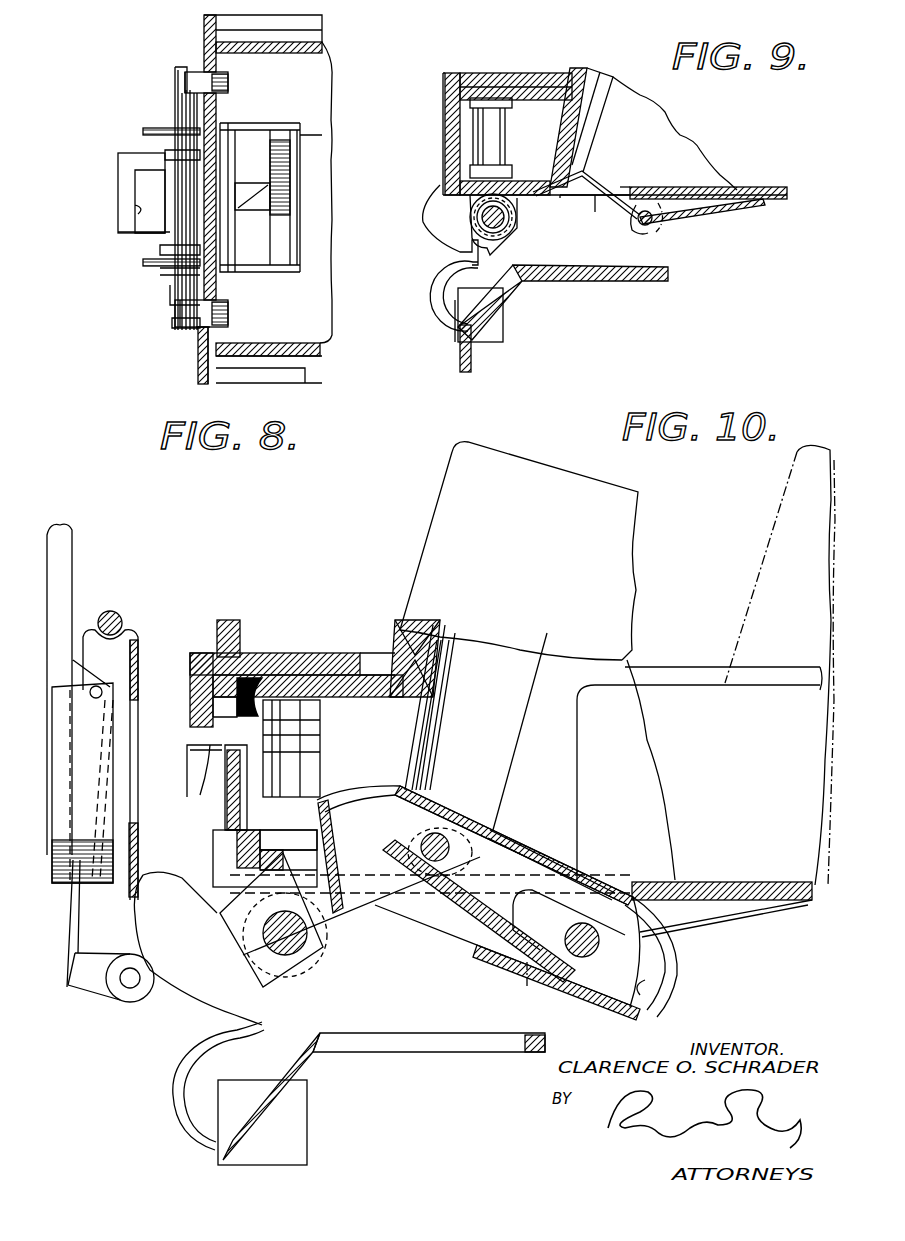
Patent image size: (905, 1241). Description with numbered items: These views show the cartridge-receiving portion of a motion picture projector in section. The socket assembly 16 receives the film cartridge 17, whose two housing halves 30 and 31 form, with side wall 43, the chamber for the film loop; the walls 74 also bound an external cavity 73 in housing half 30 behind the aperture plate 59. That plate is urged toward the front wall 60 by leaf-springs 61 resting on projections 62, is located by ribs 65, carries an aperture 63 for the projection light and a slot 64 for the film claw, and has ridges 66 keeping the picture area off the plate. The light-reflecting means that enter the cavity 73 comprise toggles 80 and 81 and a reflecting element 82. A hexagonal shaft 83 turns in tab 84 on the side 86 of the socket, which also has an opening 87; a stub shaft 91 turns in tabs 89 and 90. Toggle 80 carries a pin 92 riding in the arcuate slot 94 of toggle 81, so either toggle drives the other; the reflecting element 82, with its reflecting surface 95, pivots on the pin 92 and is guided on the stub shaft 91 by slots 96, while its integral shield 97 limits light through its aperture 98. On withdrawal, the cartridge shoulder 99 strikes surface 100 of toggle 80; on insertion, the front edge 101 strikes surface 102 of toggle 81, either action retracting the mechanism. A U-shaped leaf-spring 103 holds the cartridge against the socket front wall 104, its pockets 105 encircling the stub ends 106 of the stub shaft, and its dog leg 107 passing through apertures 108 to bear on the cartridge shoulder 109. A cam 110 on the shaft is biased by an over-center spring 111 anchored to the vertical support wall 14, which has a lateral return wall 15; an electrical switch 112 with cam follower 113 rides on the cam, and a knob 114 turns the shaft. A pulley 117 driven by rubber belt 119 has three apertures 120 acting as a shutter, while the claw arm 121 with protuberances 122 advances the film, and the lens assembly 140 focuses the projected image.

In FIG. 9, the vertical support wall 14 is at (472, 362).
In FIG. 9, the lateral return wall 15 is at (627, 280).
In FIG. 10, the lateral return wall 15 is at (540, 1055).
In FIG. 8, the socket assembly 16 is at (189, 381).
In FIG. 9, the socket assembly 16 is at (486, 65).
In FIG. 10, the socket assembly 16 is at (255, 652).
In FIG. 8, the film cartridge 17 is at (347, 63).
In FIG. 9, the film cartridge 17 is at (690, 137).
In FIG. 10, the film cartridge 17 is at (758, 506).
In FIG. 9, the housing half 30 is at (605, 65).
In FIG. 10, the housing half 30 is at (237, 838).
In FIG. 9, the housing half 31 is at (578, 67).
In FIG. 10, the housing half 31 is at (418, 576).
In FIG. 10, the side wall 43 is at (342, 675).
In FIG. 8, the aperture plate 59 is at (286, 231).
In FIG. 9, the aperture plate 59 is at (491, 134).
In FIG. 10, the aperture plate 59 is at (296, 773).
In FIG. 10, the front wall 60 is at (275, 675).
In FIG. 8, the leaf-springs 61 is at (290, 270).
In FIG. 9, the leaf-springs 61 is at (505, 152).
In FIG. 10, the leaf-springs 61 is at (320, 758).
In FIG. 10, the projections 62 is at (308, 765).
In FIG. 8, the aperture 63 is at (276, 198).
In FIG. 10, the slot 64 is at (290, 745).
In FIG. 10, the ribs 65 is at (315, 675).
In FIG. 8, the raised portions or ridges 66 is at (285, 250).
In FIG. 8, the external cavity 73 is at (318, 288).
In FIG. 8, the walls 74 is at (320, 335).
In FIG. 9, the walls 74 is at (607, 85).
In FIG. 8, the toggle 80 is at (160, 250).
In FIG. 10, the toggle 80 is at (380, 940).
In FIG. 8, the toggle 81 is at (148, 265).
In FIG. 10, the toggle 81 is at (488, 958).
In FIG. 8, the reflecting element 82 is at (118, 234).
In FIG. 10, the reflecting element 82 is at (677, 968).
In FIG. 9, the hexagonal shaft 83 is at (509, 220).
In FIG. 10, the hexagonal shaft 83 is at (272, 955).
In FIG. 9, the tab 84 is at (513, 230).
In FIG. 10, the tab 84 is at (228, 945).
In FIG. 8, the side 86 is at (204, 20).
In FIG. 9, the side 86 is at (775, 188).
In FIG. 10, the side 86 is at (197, 905).
In FIG. 8, the opening 87 is at (238, 265).
In FIG. 10, the opening 87 is at (640, 885).
In FIG. 8, the tab 89 is at (170, 125).
In FIG. 8, the tab 90 is at (168, 272).
In FIG. 9, the tab 90 is at (660, 222).
In FIG. 10, the tab 90 is at (521, 987).
In FIG. 8, the stub shaft 91 is at (170, 300).
In FIG. 10, the stub shaft 91 is at (595, 945).
In FIG. 10, the pin 92 is at (440, 830).
In FIG. 10, the arcuate slot 94 is at (425, 920).
In FIG. 10, the reflecting surface 95 is at (482, 920).
In FIG. 8, the slots 96 is at (180, 160).
In FIG. 10, the slots 96 is at (650, 990).
In FIG. 8, the shield 97 is at (118, 186).
In FIG. 10, the shield 97 is at (340, 925).
In FIG. 8, the aperture 98 is at (135, 212).
In FIG. 10, the aperture 98 is at (317, 807).
In FIG. 10, the shoulder 99 is at (288, 839).
In FIG. 10, the surface 100 is at (280, 877).
In FIG. 10, the front edge 101 is at (235, 862).
In FIG. 10, the surface 102 is at (510, 832).
In FIG. 8, the U-shaped leaf-spring 103 is at (194, 337).
In FIG. 9, the U-shaped leaf-spring 103 is at (704, 218).
In FIG. 10, the U-shaped leaf-spring 103 is at (792, 928).
In FIG. 9, the front wall 104 is at (445, 115).
In FIG. 9, the pockets 105 is at (650, 226).
In FIG. 8, the stub ends 106 is at (172, 325).
In FIG. 9, the stub ends 106 is at (638, 228).
In FIG. 8, the dog leg 107 is at (228, 310).
In FIG. 9, the dog leg 107 is at (605, 187).
In FIG. 8, the apertures 108 is at (210, 326).
In FIG. 9, the apertures 108 is at (595, 212).
In FIG. 9, the shoulder 109 is at (592, 173).
In FIG. 9, the cam 110 is at (445, 216).
In FIG. 10, the cam 110 is at (193, 995).
In FIG. 9, the over-center spring 111 is at (436, 313).
In FIG. 10, the over-center spring 111 is at (175, 1100).
In FIG. 10, the electrical switch 112 is at (72, 532).
In FIG. 10, the cam follower 113 is at (140, 1005).
In FIG. 10, the on and off knob 114 is at (218, 708).
In FIG. 10, the pulley 117 is at (158, 690).
In FIG. 10, the rubber belt 119 is at (113, 611).
In FIG. 10, the apertures 120 is at (160, 726).
In FIG. 10, the claw arm 121 is at (180, 765).
In FIG. 10, the protuberances 122 is at (208, 785).
In FIG. 10, the lens assembly 140 is at (71, 897).